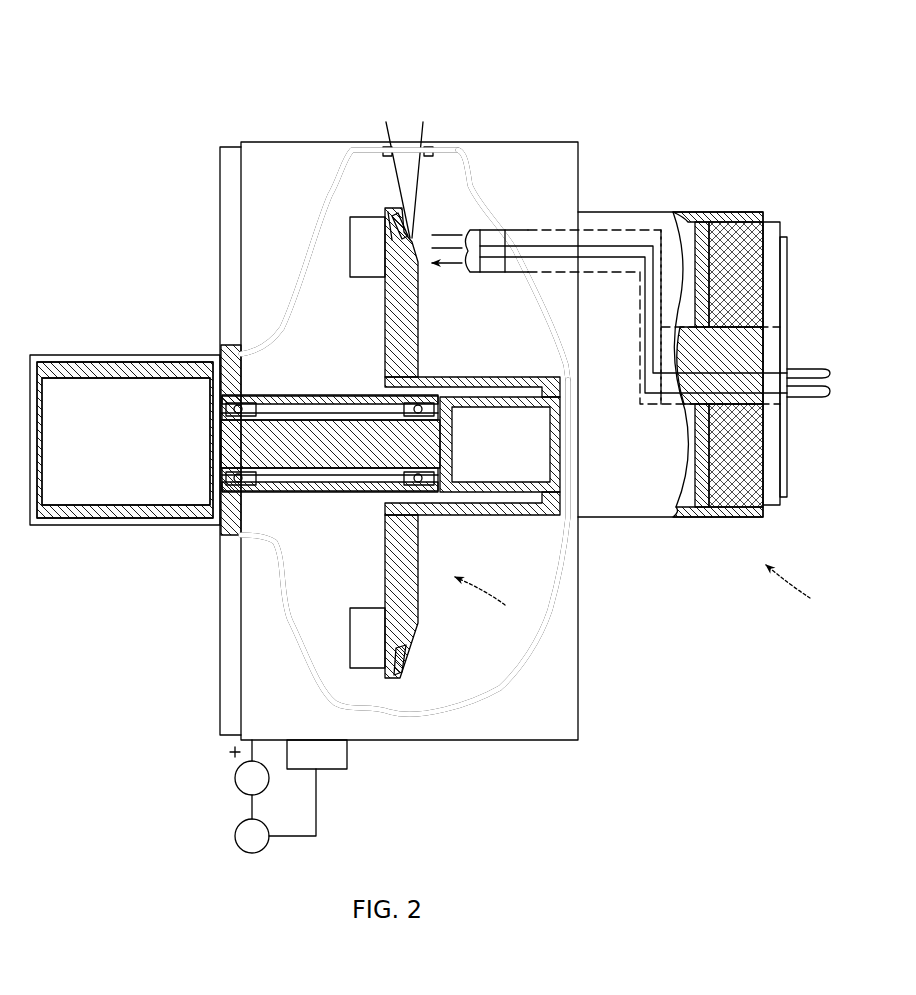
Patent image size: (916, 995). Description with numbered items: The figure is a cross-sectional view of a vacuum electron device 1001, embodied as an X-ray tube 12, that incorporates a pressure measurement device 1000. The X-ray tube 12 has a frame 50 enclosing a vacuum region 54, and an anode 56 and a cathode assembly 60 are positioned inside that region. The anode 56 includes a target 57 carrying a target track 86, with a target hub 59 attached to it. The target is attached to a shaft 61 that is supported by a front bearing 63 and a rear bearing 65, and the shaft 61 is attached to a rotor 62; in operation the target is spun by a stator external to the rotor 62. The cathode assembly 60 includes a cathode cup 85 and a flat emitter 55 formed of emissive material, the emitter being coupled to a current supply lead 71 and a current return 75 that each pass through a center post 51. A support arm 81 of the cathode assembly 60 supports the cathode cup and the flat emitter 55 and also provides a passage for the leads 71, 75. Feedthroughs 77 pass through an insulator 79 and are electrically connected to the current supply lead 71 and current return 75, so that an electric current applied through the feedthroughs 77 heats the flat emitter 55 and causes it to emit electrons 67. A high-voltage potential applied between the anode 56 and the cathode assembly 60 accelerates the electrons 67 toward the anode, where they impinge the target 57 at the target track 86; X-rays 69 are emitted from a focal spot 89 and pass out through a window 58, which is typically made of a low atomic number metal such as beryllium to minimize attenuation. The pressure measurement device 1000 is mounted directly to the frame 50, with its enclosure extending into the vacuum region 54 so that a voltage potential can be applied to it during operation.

The vacuum electron device 1001 is at (258, 78).
The frame 50 is at (378, 145).
The window 58 is at (410, 140).
The X-rays 69 is at (388, 178).
The cathode cup 85 is at (478, 228).
The vacuum region 54 is at (528, 563).
The rotor 62 is at (75, 525).
The rear bearing 65 is at (222, 478).
The shaft 61 is at (302, 468).
The front bearing 63 is at (400, 492).
The cathode assembly 60 is at (498, 293).
The focal spot 89 is at (398, 232).
The target track 86 is at (387, 296).
The electrons 67 is at (452, 232).
The flat emitter 55 is at (487, 258).
The current supply lead 71 is at (646, 355).
The support arm 81 is at (592, 230).
The current return 75 is at (625, 246).
The center post 51 is at (684, 410).
The insulator 79 is at (785, 278).
The feedthroughs 77 is at (834, 388).
The X-ray tube 12 is at (798, 594).
The target hub 59 is at (505, 516).
The target 57 is at (418, 625).
The anode 56 is at (493, 600).
The pressure measurement device 1000 is at (327, 782).